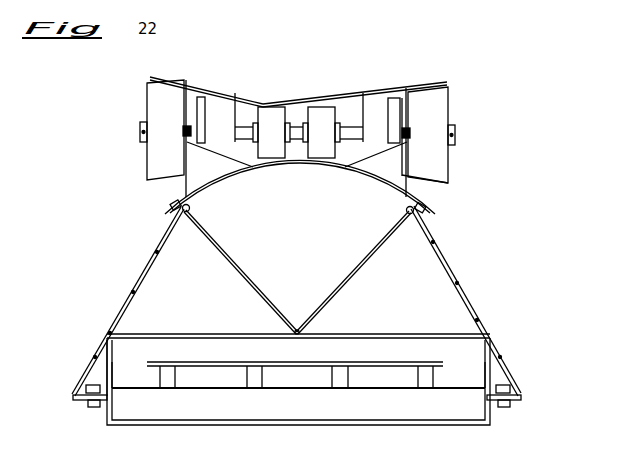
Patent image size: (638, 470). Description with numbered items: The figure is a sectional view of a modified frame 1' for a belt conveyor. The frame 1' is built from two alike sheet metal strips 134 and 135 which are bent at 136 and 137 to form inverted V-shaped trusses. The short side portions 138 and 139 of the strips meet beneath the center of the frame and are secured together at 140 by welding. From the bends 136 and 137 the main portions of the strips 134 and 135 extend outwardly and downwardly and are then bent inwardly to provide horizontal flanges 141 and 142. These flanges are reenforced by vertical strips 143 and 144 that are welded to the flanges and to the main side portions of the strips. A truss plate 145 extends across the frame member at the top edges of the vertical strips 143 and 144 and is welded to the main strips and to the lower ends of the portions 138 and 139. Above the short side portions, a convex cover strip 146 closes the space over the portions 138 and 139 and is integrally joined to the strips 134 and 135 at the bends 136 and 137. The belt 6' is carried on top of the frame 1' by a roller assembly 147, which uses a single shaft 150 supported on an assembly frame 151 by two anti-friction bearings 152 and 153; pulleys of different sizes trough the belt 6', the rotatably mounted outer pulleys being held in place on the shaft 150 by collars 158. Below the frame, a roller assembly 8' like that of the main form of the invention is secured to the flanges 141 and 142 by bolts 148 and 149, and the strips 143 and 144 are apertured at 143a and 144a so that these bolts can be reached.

The frame 1' is at (117, 301).
The belt 6' is at (296, 113).
The roller assembly 8' is at (264, 377).
The sheet metal strip 134 is at (120, 310).
The sheet metal strip 135 is at (474, 307).
The bend 136 is at (184, 215).
The bend 137 is at (410, 217).
The short side portion 138 is at (243, 272).
The short side portion 139 is at (353, 266).
The weld 140 is at (298, 328).
The horizontal flange 141 is at (87, 387).
The horizontal flange 142 is at (513, 385).
The vertical strip 143 is at (108, 345).
The aperture 143a is at (113, 370).
The vertical strip 144 is at (485, 347).
The aperture 144a is at (485, 373).
The truss plate 145 is at (258, 335).
The convex cover strip 146 is at (292, 166).
The roller assembly 147 is at (133, 150).
The bolt 148 is at (93, 410).
The bolt 149 is at (500, 404).
The shaft 150 is at (245, 126).
The assembly frame 151 is at (402, 180).
The bearing 152 is at (199, 110).
The bearing 153 is at (393, 108).
The collar 158 is at (144, 124).